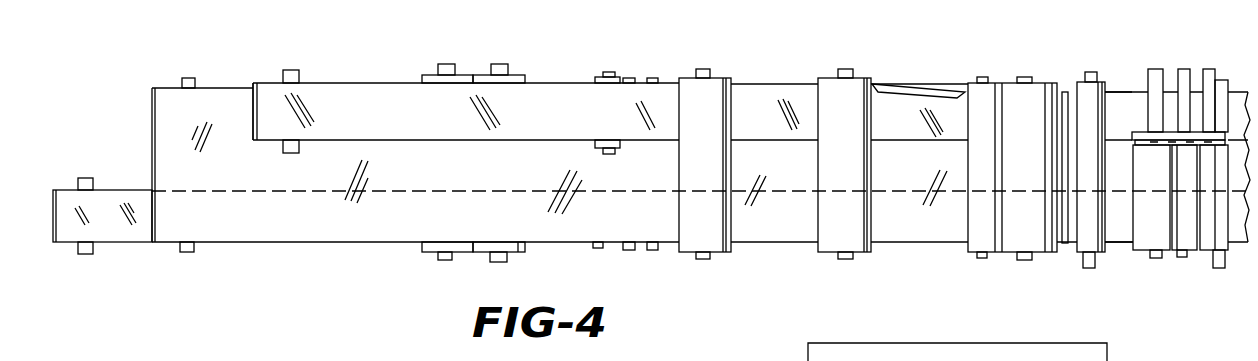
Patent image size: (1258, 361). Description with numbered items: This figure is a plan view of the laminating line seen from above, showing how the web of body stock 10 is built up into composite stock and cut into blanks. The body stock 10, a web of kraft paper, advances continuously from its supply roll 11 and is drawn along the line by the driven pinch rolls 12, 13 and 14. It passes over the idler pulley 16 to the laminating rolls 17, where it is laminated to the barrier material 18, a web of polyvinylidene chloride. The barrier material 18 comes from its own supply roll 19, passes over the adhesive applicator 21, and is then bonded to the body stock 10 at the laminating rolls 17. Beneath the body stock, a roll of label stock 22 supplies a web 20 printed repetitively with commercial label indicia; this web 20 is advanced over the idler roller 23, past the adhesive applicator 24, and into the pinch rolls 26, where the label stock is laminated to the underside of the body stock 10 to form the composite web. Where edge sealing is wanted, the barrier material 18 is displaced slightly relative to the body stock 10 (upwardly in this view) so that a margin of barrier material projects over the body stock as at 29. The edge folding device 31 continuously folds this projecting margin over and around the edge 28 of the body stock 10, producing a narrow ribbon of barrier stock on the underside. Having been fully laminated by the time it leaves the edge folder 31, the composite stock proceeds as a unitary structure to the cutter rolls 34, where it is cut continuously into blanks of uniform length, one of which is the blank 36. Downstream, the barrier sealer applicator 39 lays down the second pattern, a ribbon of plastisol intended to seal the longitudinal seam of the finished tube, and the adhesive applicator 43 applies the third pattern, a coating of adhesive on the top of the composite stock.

The web of body stock 10 is at (236, 166).
The supply roll 11 is at (186, 254).
The driven pinch roll 12 is at (981, 260).
The driven pinch roll 13 is at (1090, 270).
The driven pinch roll 14 is at (1227, 90).
The idler pulley 16 is at (445, 262).
The laminating rolls 17 is at (718, 83).
The barrier material 18 is at (421, 122).
The supply roll 19 is at (301, 73).
The web of label stock 20 is at (128, 243).
The adhesive applicator 21 is at (607, 72).
The roll of label stock 22 is at (86, 254).
The idler roller 23 is at (505, 70).
The adhesive applicator 24 is at (628, 251).
The pinch rolls 26 is at (828, 88).
The edge of body stock 28 is at (222, 88).
The margin of barrier material 29 is at (251, 86).
The edge folding device 31 is at (915, 91).
The cutter rolls 34 is at (1038, 85).
The blank 36 is at (1118, 230).
The barrier sealer applicator 39 is at (1130, 132).
The adhesive applicator 43 is at (1150, 237).